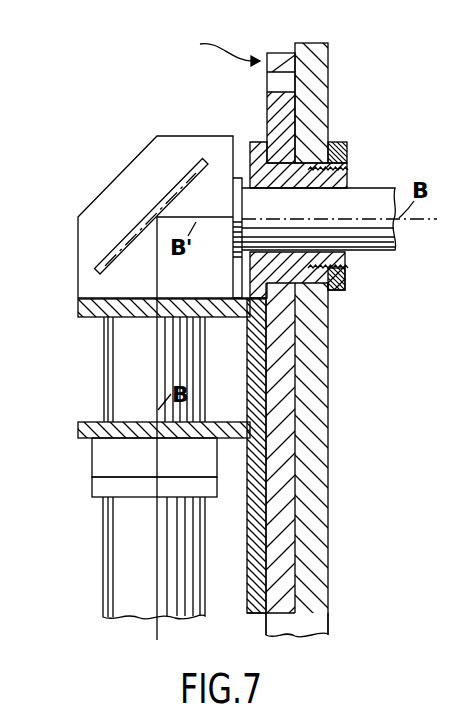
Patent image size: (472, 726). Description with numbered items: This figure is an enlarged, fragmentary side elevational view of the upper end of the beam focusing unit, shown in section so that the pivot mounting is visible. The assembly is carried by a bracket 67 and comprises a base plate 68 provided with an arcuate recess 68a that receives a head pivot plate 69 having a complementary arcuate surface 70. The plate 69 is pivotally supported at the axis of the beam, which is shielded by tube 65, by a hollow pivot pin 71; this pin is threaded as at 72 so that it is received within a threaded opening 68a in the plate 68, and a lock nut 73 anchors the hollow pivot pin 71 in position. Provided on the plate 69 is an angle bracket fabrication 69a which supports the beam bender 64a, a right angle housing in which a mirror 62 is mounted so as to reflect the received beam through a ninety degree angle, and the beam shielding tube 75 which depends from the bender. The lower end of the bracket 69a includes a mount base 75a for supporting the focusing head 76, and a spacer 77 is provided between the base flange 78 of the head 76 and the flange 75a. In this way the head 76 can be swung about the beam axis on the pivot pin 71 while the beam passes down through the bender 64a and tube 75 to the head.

The mirror 62 is at (158, 198).
The beam bender 64a is at (92, 284).
The shielding tube 65 is at (369, 249).
The bracket 67 is at (216, 48).
The base plate 68 is at (317, 363).
The arcuate recess 68a is at (328, 150).
The head pivot plate 69 is at (275, 102).
The angle bracket fabrication 69a is at (200, 318).
The arcuate surface 70 is at (293, 612).
The hollow pivot pin 71 is at (283, 165).
The thread 72 is at (342, 172).
The lock nut 73 is at (349, 290).
The beam shielding tube 75 is at (116, 373).
The mount base 75a is at (90, 430).
The focusing head 76 is at (104, 552).
The spacer 77 is at (103, 462).
The base flange 78 is at (100, 485).